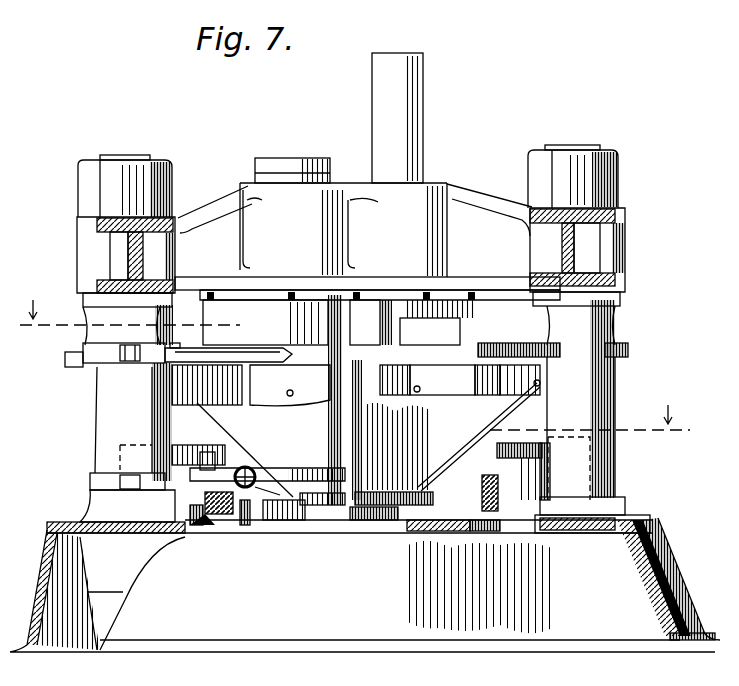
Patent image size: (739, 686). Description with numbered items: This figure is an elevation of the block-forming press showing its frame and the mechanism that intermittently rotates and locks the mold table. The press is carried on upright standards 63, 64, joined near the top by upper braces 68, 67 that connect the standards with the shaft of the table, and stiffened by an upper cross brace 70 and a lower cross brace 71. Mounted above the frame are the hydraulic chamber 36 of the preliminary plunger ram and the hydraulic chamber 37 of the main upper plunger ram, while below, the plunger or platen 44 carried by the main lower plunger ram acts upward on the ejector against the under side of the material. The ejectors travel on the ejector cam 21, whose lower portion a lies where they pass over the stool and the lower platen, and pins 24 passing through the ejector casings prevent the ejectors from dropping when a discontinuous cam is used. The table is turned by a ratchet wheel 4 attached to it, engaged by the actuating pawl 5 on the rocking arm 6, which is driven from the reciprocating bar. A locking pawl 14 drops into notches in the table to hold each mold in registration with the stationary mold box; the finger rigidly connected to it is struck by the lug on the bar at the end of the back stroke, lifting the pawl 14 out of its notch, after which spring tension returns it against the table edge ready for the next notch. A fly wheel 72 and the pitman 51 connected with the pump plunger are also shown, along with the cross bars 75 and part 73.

The hydraulic chamber of the preliminary plunger ram 36 is at (426, 143).
The hydraulic chamber of the main upper plunger ram 37 is at (315, 202).
The upper brace 68 is at (178, 220).
The upper brace 67 is at (575, 246).
The standard of the press 63 is at (100, 410).
The standard of the press 64 is at (600, 426).
The cross bars 75 is at (82, 368).
The locking pawl 14 is at (205, 360).
The rocking arm 6 is at (240, 548).
The pins 24 is at (530, 388).
The ejector cam 21 is at (502, 444).
The lower portion of the ejector cam a is at (492, 450).
The lower cross brace 71 is at (188, 468).
The fly wheel 72 is at (252, 468).
The arm 73 is at (260, 472).
The plunger or platen 44 is at (305, 470).
The ratchet wheel 4 is at (432, 497).
The pitman 51 is at (488, 514).
The upper cross brace 70 is at (210, 530).
The actuating pawl 5 is at (265, 522).